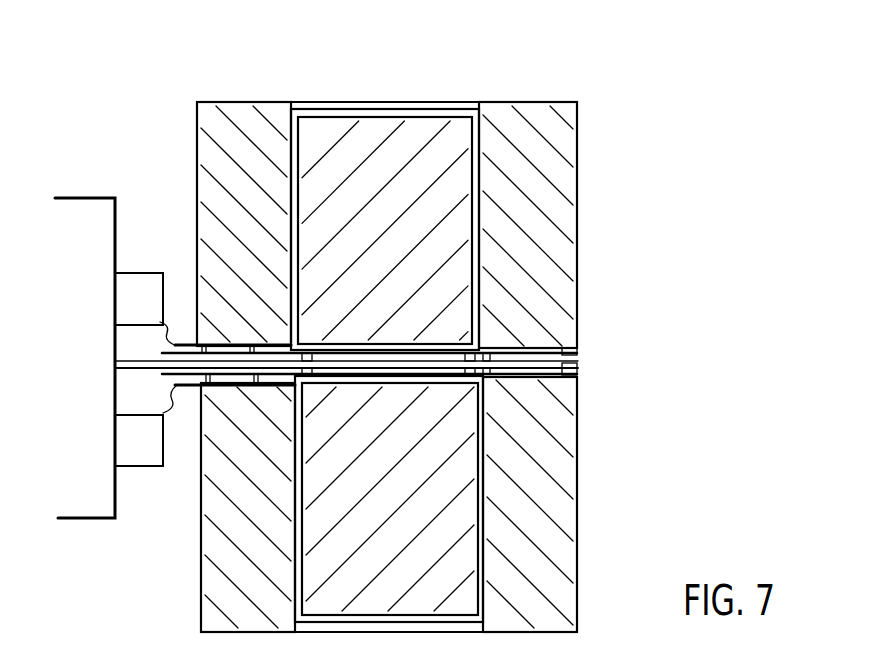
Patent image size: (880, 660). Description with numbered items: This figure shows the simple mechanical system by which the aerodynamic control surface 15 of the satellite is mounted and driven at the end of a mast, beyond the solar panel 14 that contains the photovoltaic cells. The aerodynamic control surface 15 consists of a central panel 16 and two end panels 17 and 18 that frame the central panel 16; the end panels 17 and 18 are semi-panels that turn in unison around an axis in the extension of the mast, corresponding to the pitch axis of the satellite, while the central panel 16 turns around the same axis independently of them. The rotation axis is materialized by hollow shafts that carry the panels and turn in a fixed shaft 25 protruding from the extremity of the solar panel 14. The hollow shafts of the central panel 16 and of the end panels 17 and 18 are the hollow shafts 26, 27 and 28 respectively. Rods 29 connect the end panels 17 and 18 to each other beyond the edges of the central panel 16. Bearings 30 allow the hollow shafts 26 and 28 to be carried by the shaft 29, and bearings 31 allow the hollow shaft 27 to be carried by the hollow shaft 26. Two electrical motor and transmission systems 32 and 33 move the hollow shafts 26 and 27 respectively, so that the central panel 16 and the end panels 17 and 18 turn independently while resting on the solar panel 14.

The solar panel 14 is at (88, 207).
The aerodynamic control surface 15 is at (335, 334).
The central panel 16 is at (348, 152).
The end panel 17 is at (222, 118).
The end panel 18 is at (546, 122).
The fixed shaft 25 is at (580, 362).
The hollow shaft 26 is at (252, 345).
The hollow shaft 27 is at (183, 343).
The hollow shaft 28 is at (545, 340).
The rods 29 is at (410, 108).
The bearings 30 is at (312, 374).
The bearings 31 is at (288, 387).
The electrical motor and transmission system 32 is at (138, 446).
The electrical motor and transmission system 33 is at (130, 303).